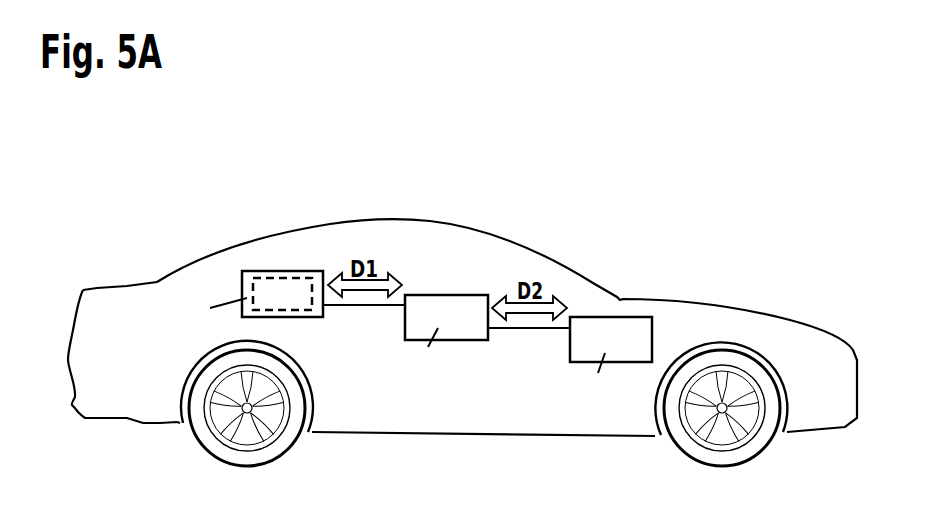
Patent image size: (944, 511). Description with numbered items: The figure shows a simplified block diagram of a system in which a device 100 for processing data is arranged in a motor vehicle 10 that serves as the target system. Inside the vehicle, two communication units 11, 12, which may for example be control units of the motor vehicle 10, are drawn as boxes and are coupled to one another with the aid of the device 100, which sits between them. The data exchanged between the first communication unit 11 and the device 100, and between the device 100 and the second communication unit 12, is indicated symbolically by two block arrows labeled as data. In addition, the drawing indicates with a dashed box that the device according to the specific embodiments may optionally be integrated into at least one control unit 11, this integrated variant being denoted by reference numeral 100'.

The motor vehicle 10 is at (698, 160).
The communication unit 11 is at (263, 271).
The device integrated into control unit 100' is at (295, 247).
The device 100 is at (432, 320).
The communication unit 12 is at (612, 317).